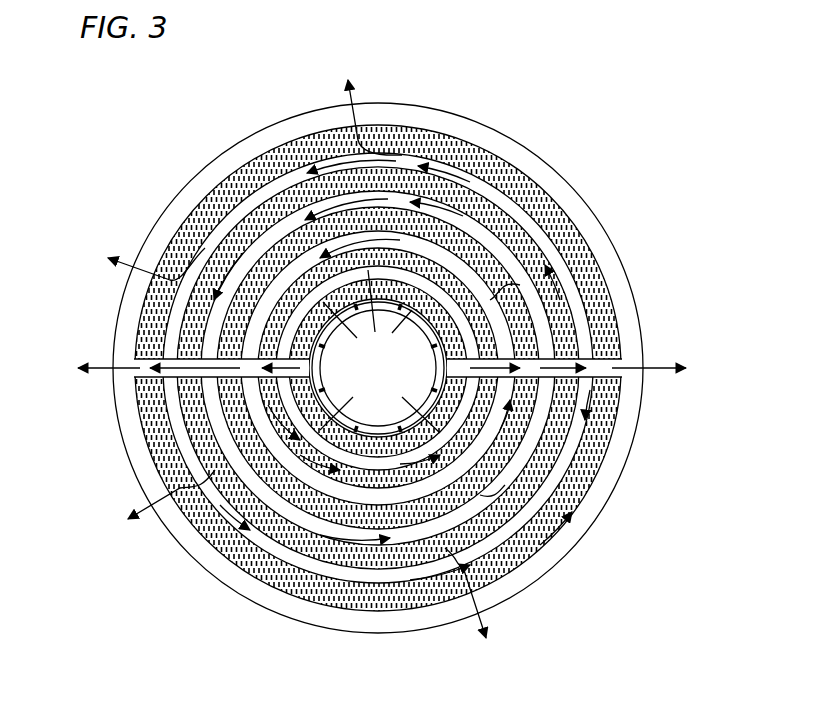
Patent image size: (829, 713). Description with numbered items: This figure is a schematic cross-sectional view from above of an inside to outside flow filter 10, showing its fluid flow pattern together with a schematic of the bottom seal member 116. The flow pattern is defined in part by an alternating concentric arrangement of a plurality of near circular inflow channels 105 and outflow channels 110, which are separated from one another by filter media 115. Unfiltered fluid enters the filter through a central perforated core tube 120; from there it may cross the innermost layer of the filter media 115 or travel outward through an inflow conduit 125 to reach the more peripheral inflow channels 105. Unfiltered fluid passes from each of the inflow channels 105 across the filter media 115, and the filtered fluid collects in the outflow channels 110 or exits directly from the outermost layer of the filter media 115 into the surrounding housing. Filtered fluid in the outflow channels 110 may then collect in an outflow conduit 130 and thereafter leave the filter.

The inside to outside flow filter 10 is at (458, 86).
The inflow channels 105 is at (322, 492).
The outflow channels 110 is at (508, 488).
The filter media 115 is at (513, 284).
The bottom seal member 116 is at (500, 138).
The perforated core tube 120 is at (435, 370).
The inflow conduit 125 is at (594, 351).
The outflow conduit 130 is at (133, 363).